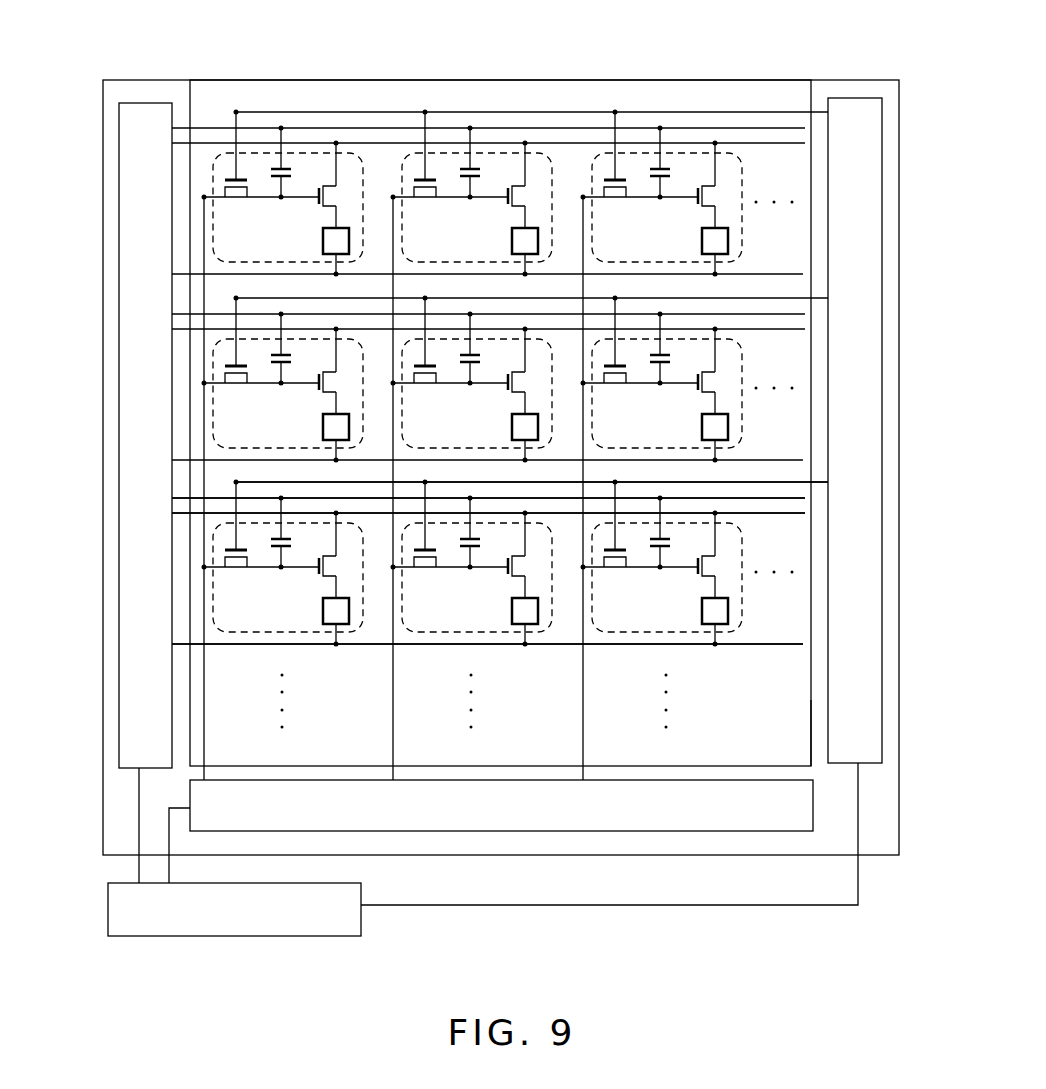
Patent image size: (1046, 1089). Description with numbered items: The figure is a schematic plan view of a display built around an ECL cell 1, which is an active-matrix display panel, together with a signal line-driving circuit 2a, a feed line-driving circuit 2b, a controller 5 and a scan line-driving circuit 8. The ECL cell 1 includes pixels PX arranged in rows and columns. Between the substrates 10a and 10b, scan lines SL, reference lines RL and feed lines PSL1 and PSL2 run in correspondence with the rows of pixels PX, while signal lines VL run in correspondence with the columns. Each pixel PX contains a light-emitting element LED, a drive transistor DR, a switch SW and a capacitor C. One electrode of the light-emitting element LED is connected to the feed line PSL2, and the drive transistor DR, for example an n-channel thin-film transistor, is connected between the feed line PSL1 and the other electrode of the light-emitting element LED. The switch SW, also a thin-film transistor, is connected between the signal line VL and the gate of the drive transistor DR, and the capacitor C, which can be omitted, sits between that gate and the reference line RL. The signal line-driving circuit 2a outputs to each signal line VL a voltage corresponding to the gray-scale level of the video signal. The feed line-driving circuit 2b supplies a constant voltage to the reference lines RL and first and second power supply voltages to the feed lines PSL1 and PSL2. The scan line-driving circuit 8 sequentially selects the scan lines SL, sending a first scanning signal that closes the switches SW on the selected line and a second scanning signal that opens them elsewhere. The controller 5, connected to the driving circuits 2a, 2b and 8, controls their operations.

The ECL cell 1 is at (653, 72).
The signal line-driving circuit 2a is at (497, 831).
The feed line-driving circuit 2b is at (146, 103).
The controller 5 is at (235, 936).
The scan line-driving circuit 8 is at (856, 98).
The substrate 10a is at (715, 853).
The substrate 10b is at (815, 748).
The scan line SL is at (566, 480).
The reference line RL is at (788, 497).
The feed line PSL1 is at (758, 511).
The feed line PSL2 is at (753, 645).
The signal line VL is at (583, 703).
The pixel PX is at (627, 632).
The switch SW is at (615, 569).
The capacitor C is at (672, 542).
The drive transistor DR is at (720, 563).
The light-emitting element LED is at (702, 615).